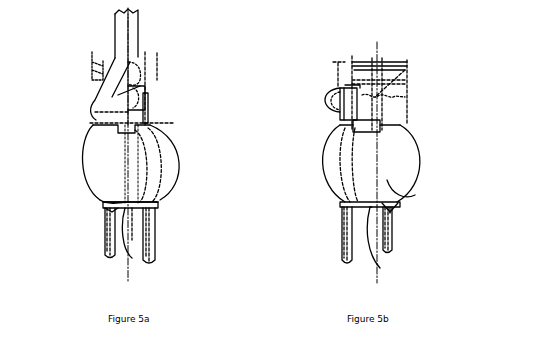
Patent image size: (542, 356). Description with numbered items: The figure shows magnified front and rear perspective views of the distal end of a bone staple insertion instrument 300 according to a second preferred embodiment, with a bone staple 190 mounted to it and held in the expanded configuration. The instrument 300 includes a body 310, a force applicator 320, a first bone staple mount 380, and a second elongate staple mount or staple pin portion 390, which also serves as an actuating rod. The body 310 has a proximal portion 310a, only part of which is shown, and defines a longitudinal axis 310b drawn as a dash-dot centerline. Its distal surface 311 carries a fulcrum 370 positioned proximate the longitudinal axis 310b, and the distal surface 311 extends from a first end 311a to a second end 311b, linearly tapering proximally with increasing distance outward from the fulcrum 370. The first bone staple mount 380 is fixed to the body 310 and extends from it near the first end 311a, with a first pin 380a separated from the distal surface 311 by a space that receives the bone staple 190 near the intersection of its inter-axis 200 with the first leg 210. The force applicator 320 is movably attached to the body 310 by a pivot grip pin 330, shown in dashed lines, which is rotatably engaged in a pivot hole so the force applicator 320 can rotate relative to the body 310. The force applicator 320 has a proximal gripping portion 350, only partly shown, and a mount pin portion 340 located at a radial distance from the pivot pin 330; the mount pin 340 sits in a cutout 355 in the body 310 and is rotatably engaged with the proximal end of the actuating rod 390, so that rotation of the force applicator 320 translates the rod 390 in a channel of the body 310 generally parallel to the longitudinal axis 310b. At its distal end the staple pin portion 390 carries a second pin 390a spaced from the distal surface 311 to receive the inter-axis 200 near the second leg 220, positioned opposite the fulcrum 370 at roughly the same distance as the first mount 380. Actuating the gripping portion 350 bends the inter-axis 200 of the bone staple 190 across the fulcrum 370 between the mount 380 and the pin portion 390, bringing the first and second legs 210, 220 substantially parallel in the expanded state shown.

In FIG. 5A, the bone staple 190 is at (170, 232).
In FIG. 5B, the bone staple 190 is at (332, 220).
In FIG. 5A, the inter-axis 200 is at (128, 270).
In FIG. 5B, the inter-axis 200 is at (380, 260).
In FIG. 5A, the first leg 210 is at (107, 252).
In FIG. 5B, the first leg 210 is at (392, 235).
In FIG. 5A, the second leg 220 is at (157, 255).
In FIG. 5B, the second leg 220 is at (342, 240).
In FIG. 5A, the bone staple insertion instrument 300 is at (62, 85).
In FIG. 5B, the bone staple insertion instrument 300 is at (432, 78).
In FIG. 5A, the body 310 is at (98, 155).
In FIG. 5B, the body 310 is at (397, 135).
In FIG. 5B, the proximal portion 310a is at (387, 62).
In FIG. 5A, the longitudinal axis 310b is at (130, 267).
In FIG. 5B, the longitudinal axis 310b is at (377, 53).
In FIG. 5A, the distal surface 311 is at (140, 212).
In FIG. 5A, the first end 311a is at (103, 202).
In FIG. 5A, the second end 311b is at (153, 202).
In FIG. 5A, the force applicator 320 is at (117, 98).
In FIG. 5B, the force applicator 320 is at (333, 63).
In FIG. 5B, the pivot grip pin 330 is at (405, 72).
In FIG. 5A, the mount pin portion 340 is at (147, 100).
In FIG. 5B, the mount pin portion 340 is at (350, 100).
In FIG. 5A, the gripping portion 350 is at (123, 30).
In FIG. 5A, the cutout 355 is at (159, 92).
In FIG. 5B, the cutout 355 is at (319, 90).
In FIG. 5A, the fulcrum 370 is at (100, 198).
In FIG. 5B, the fulcrum 370 is at (387, 180).
In FIG. 5A, the first bone staple mount 380 is at (103, 235).
In FIG. 5B, the first bone staple mount 380 is at (398, 203).
In FIG. 5A, the first pin 380a is at (107, 205).
In FIG. 5B, the first pin 380a is at (390, 212).
In FIG. 5A, the staple pin portion 390 is at (143, 118).
In FIG. 5B, the staple pin portion 390 is at (342, 113).
In FIG. 5B, the second pin 390a is at (342, 203).